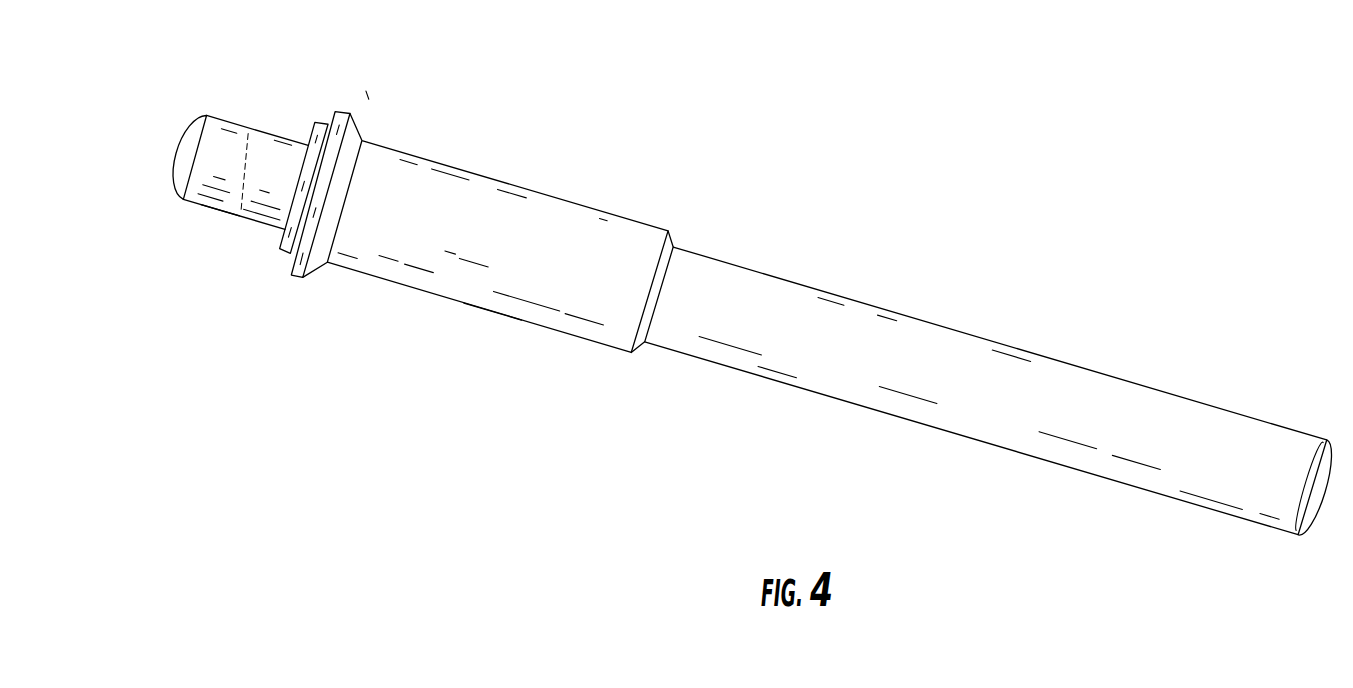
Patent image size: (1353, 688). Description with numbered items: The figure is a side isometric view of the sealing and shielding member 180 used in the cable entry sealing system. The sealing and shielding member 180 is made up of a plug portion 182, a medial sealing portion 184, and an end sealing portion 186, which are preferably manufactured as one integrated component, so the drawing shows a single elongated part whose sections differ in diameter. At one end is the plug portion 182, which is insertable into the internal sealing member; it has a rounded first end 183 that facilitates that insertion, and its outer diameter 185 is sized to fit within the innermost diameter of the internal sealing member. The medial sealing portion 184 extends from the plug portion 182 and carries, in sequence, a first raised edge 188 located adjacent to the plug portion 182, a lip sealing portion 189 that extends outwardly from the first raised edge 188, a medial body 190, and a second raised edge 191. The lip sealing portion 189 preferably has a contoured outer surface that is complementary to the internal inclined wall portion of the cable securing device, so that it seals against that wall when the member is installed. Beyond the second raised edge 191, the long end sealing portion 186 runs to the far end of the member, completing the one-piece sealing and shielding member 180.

The sealing and shielding member 180 is at (366, 362).
The plug portion 182 is at (208, 210).
The rounded first end 183 is at (178, 145).
The medial sealing portion 184 is at (490, 310).
The outer diameter 185 is at (231, 118).
The end sealing portion 186 is at (1065, 463).
The first raised edge 188 is at (283, 260).
The lip sealing portion 189 is at (339, 113).
The medial body 190 is at (501, 175).
The second raised edge 191 is at (643, 343).